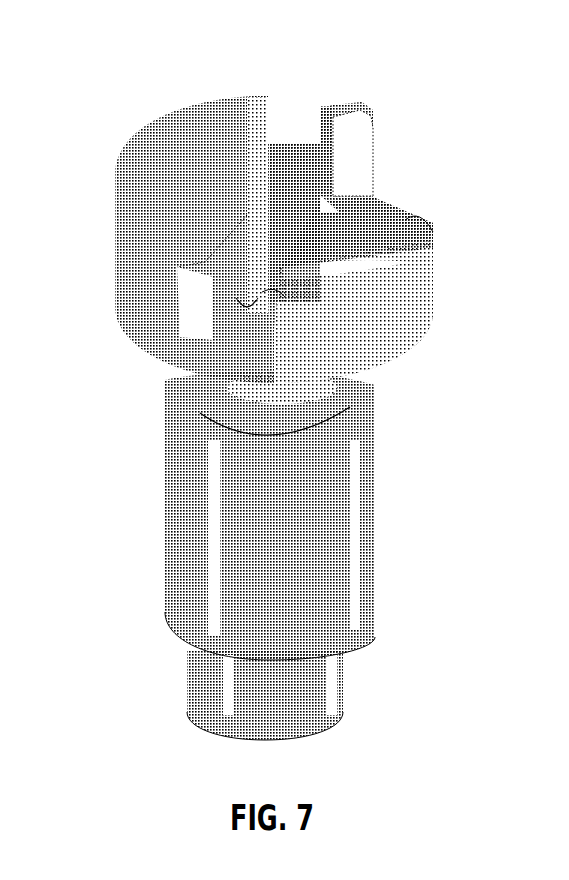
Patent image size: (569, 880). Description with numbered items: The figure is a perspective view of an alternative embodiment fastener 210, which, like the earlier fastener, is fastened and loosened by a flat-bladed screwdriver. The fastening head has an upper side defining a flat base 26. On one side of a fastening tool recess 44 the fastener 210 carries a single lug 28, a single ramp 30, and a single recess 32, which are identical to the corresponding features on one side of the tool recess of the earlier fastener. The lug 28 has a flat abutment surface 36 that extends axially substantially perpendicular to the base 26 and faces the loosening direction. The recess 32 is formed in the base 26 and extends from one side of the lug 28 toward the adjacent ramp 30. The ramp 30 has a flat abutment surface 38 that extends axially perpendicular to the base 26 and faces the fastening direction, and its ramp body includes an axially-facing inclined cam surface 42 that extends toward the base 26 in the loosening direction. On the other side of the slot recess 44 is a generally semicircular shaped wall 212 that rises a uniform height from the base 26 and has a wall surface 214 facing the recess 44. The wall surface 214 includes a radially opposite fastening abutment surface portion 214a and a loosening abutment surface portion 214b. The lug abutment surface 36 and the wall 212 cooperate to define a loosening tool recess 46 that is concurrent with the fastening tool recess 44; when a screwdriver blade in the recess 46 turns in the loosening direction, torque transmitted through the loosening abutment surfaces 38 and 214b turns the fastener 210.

The fastener 210 is at (280, 385).
The semicircular shaped wall 212 is at (280, 223).
The wall surface 214 is at (238, 230).
The fastening abutment surface portion 214a is at (223, 270).
The loosening abutment surface portion 214b is at (266, 136).
The flat base 26 is at (297, 150).
The drive lug 28 is at (340, 110).
The flat abutment surface 36 is at (327, 117).
The recess 32 is at (381, 203).
The inclined cam surface 42 is at (406, 219).
The circumferential ramp 30 is at (387, 260).
The ramp abutment surface 38 is at (277, 290).
The fastening tool recess 44 is at (160, 358).
The loosening tool recess 46 is at (125, 394).